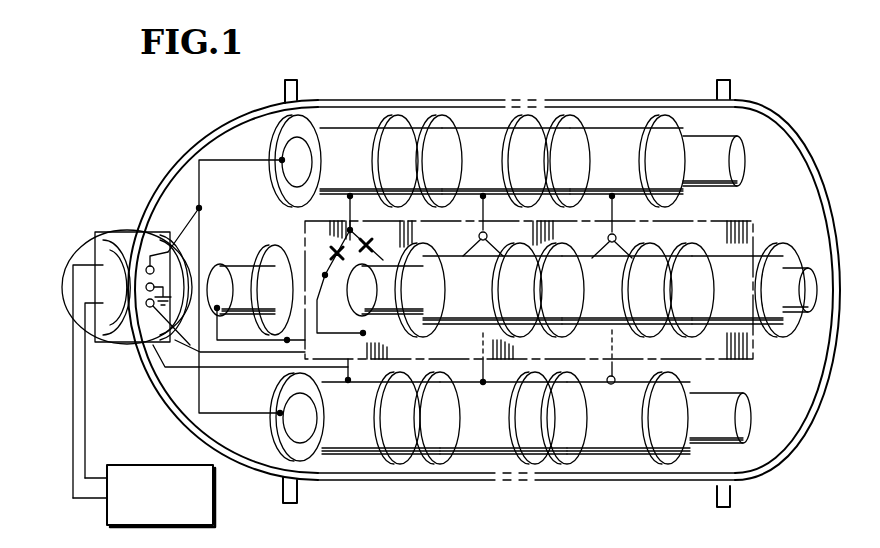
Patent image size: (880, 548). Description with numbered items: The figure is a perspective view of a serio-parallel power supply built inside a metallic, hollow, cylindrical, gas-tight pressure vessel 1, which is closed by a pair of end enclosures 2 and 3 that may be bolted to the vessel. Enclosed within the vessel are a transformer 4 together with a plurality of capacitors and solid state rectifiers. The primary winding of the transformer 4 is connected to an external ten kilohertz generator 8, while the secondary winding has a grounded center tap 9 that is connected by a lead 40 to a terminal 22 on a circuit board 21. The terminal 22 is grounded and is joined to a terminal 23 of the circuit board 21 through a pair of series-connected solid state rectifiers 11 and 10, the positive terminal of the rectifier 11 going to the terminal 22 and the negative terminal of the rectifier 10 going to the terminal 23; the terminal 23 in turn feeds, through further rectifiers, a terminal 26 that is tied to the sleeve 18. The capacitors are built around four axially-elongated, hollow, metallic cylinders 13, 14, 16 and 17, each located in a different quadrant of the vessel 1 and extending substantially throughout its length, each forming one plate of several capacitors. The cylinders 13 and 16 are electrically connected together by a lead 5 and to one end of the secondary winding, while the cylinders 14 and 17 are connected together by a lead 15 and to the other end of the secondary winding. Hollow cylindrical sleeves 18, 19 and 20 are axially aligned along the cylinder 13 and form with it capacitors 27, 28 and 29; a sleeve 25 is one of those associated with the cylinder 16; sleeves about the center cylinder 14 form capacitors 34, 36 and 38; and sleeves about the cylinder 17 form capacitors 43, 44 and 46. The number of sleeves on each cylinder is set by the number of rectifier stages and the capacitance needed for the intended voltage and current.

The pressure vessel 1 is at (331, 487).
The end enclosure 2 is at (792, 449).
The end enclosure 3 is at (188, 424).
The transformer 4 is at (131, 235).
The lead 5 is at (365, 331).
The 10 kHz generator 8 is at (155, 526).
The grounded center tap 9 is at (168, 298).
The solid state rectifier 10 is at (349, 250).
The solid state rectifier 11 is at (453, 287).
The elongated hollow metallic cylinder 13 is at (390, 268).
The elongated hollow metallic cylinder 14 is at (283, 150).
The lead 15 is at (231, 174).
The elongated hollow metallic cylinder 16 is at (222, 263).
The elongated hollow metallic cylinder 17 is at (284, 431).
The cylindrical sleeve 18 is at (466, 333).
The cylindrical sleeve 19 is at (602, 333).
The cylindrical sleeve 20 is at (734, 333).
The circuit board 21 is at (391, 238).
The terminal 22 is at (352, 300).
The terminal 23 is at (353, 212).
The sleeve 25 is at (268, 245).
The terminal 26 is at (489, 236).
The capacitor 27 is at (478, 290).
The capacitor 28 is at (613, 290).
The capacitor 29 is at (740, 290).
The capacitor 34 is at (352, 126).
The capacitor 36 is at (482, 130).
The capacitor 38 is at (613, 135).
The lead 40 is at (222, 368).
The capacitor 43 is at (381, 418).
The capacitor 44 is at (490, 418).
The capacitor 46 is at (646, 418).